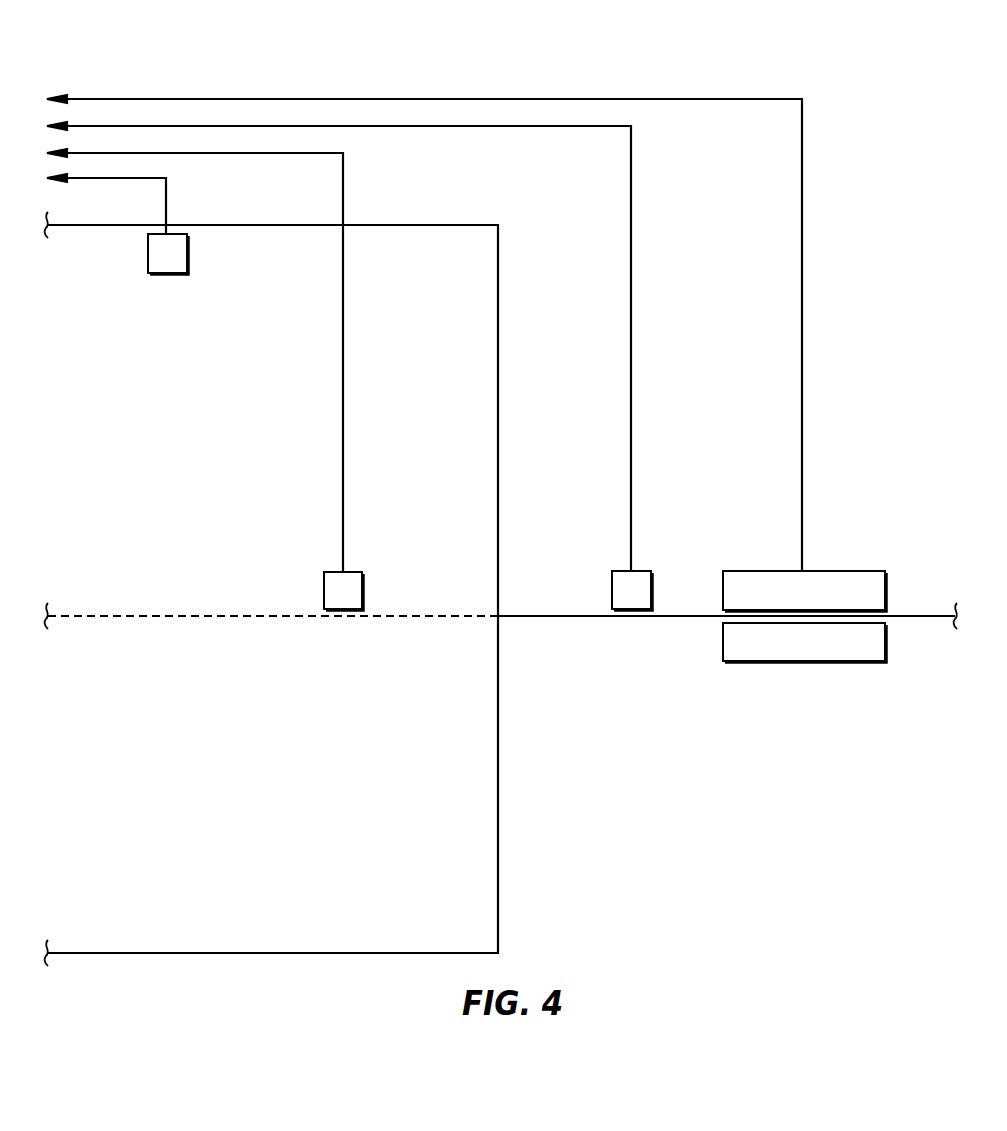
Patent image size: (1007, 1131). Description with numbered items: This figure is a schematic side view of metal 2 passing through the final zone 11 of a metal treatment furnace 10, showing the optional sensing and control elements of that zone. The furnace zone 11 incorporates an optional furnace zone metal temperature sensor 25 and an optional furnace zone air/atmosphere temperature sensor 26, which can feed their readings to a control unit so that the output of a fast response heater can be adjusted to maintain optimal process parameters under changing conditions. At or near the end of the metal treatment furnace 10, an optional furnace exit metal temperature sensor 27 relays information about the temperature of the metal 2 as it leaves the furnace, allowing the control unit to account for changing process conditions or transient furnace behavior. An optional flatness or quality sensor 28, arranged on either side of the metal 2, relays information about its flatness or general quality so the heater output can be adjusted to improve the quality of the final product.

The metal treatment furnace 10 is at (533, 52).
The final zone 11 is at (498, 277).
The metal 2 is at (625, 617).
The furnace zone metal temperature sensor 25 is at (334, 572).
The furnace zone air/atmosphere temperature sensor 26 is at (165, 273).
The furnace exit metal temperature sensor 27 is at (622, 571).
The flatness or quality sensor 28 is at (751, 571).